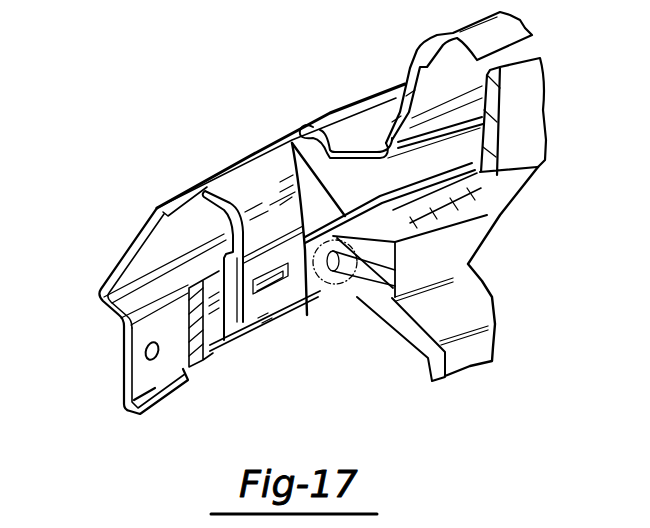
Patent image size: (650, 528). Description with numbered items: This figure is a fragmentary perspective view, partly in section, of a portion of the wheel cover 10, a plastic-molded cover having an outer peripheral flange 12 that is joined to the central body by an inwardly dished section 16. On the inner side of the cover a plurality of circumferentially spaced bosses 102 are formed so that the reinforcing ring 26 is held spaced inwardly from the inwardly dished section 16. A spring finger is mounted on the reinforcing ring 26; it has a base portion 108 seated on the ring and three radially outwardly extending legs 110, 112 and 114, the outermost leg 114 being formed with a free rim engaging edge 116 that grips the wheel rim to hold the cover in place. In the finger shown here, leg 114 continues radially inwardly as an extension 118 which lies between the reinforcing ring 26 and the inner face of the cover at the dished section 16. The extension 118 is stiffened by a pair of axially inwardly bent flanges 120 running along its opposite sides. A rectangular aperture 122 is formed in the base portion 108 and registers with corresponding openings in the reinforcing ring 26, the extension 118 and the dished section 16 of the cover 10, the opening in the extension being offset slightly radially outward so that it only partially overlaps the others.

The wheel cover 10 is at (498, 327).
The outer peripheral flange 12 is at (535, 117).
The inwardly dished section 16 is at (455, 253).
The reinforcing ring 26 is at (213, 363).
The bosses 102 is at (367, 298).
The base portion 108 is at (125, 382).
The leg 110 is at (115, 307).
The leg 112 is at (132, 240).
The leg 114 is at (226, 172).
The free rim engaging edge 116 is at (182, 205).
The extension 118 is at (232, 207).
The axially inwardly bent flanges 120 is at (232, 335).
The aperture 122 is at (276, 286).